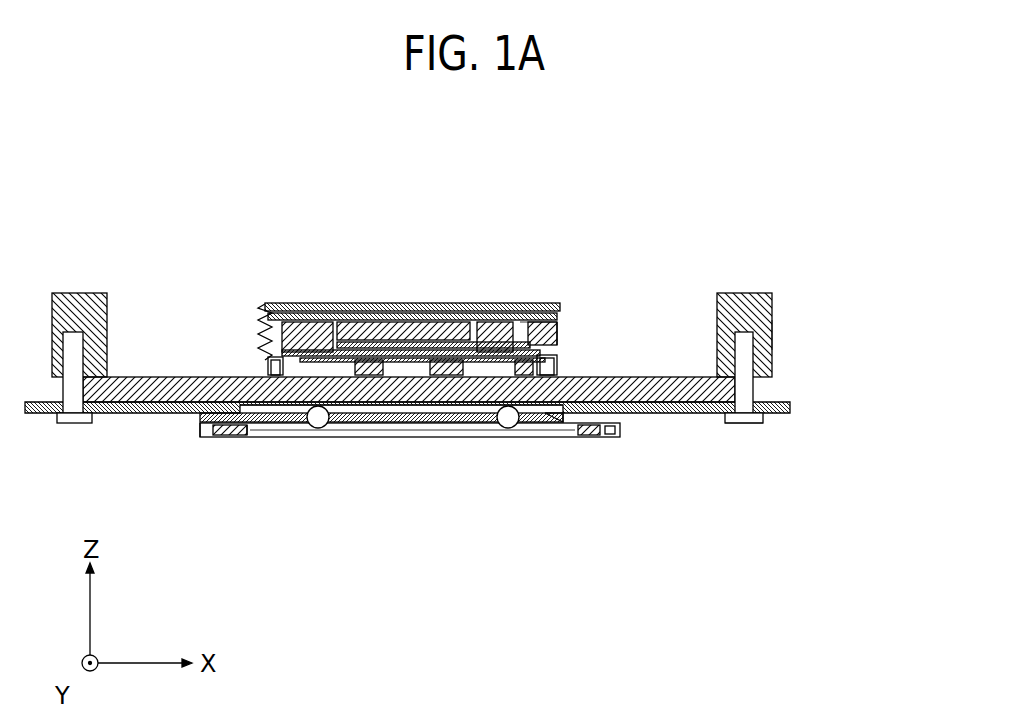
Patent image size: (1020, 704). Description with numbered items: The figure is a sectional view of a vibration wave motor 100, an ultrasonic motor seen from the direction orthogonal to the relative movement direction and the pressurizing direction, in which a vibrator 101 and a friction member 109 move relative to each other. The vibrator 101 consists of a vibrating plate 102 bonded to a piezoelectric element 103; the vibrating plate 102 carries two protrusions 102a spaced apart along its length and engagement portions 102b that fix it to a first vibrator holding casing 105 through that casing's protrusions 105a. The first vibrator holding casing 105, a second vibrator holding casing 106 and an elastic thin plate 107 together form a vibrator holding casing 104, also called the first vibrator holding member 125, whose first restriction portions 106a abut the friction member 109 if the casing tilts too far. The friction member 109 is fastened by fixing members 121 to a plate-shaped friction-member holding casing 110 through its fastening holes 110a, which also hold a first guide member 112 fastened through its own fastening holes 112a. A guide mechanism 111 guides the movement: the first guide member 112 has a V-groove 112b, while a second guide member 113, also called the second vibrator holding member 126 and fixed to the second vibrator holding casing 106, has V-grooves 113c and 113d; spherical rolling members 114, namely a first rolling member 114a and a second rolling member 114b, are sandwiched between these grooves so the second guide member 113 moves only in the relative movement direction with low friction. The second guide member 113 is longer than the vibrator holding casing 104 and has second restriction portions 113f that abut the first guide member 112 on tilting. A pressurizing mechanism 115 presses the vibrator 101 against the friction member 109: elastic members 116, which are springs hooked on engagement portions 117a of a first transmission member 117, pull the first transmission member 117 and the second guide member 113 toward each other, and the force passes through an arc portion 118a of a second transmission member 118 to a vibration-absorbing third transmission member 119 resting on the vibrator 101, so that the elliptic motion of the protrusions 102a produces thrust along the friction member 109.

The vibration wave motor 100 is at (65, 112).
The vibrator 101 is at (422, 246).
The vibrating plate 102 is at (442, 304).
The protrusions 102a is at (403, 304).
The engagement portions 102b is at (514, 304).
The piezoelectric element 103 is at (420, 304).
The vibrator holding casing 104 is at (536, 246).
The first vibrator holding casing 105 is at (560, 320).
The protrusions 105a is at (528, 304).
The second vibrator holding casing 106 is at (560, 342).
The first restriction portions 106a is at (265, 362).
The thin plate 107 is at (562, 308).
The friction member 109 is at (722, 393).
The friction-member holding casing 110 is at (772, 300).
The fastening holes 110a is at (772, 335).
The guide mechanism 111 is at (345, 580).
The first guide member 112 is at (695, 413).
The fastening holes 112a is at (740, 424).
The V-groove 112b is at (280, 408).
The second guide member 113 is at (590, 437).
The V-groove 113c is at (276, 425).
The V-groove 113d is at (588, 437).
The second restriction portions 113f is at (207, 432).
The rolling members 114 is at (413, 490).
The first rolling member 114a is at (318, 427).
The second rolling member 114b is at (506, 428).
The pressurizing mechanism 115 is at (402, 239).
The elastic members 116 is at (272, 304).
The first transmission member 117 is at (296, 304).
The engagement portions 117a is at (262, 306).
The second transmission member 118 is at (346, 304).
The arc portion 118a is at (405, 304).
The third transmission member 119 is at (316, 304).
The fixing members 121 is at (742, 368).
The first vibrator holding member 125 is at (536, 246).
The second vibrator holding member 126 is at (410, 472).